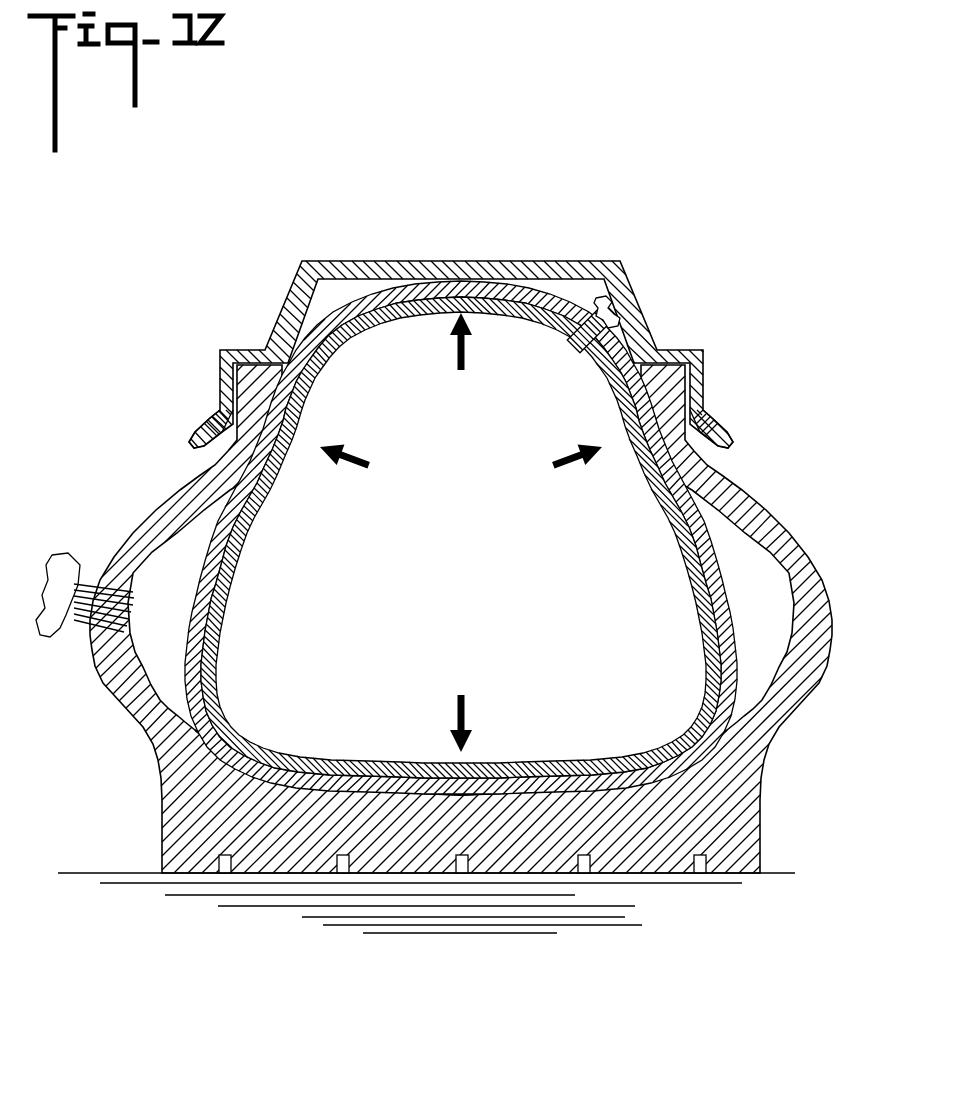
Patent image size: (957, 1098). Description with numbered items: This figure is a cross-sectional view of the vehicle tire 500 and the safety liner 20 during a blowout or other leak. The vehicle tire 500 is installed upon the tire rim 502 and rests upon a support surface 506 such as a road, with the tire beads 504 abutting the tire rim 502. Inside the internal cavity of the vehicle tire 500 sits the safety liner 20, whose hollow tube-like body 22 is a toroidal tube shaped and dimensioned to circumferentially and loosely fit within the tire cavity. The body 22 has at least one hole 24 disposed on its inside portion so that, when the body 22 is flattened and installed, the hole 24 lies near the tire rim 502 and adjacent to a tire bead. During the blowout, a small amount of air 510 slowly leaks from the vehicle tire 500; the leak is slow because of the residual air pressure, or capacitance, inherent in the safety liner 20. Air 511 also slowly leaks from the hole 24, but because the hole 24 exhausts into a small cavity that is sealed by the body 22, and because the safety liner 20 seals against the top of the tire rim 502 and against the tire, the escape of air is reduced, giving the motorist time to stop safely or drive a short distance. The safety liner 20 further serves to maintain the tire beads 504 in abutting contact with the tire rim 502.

The vehicle tire 500 is at (787, 502).
The tire rim 502 is at (537, 262).
The tire beads 504 is at (226, 424).
The support surface 506 is at (640, 893).
The air 510 is at (55, 562).
The air 511 is at (620, 318).
The safety liner 20 is at (278, 705).
The hollow tube-like body 22 is at (738, 618).
The hole 24 is at (585, 343).